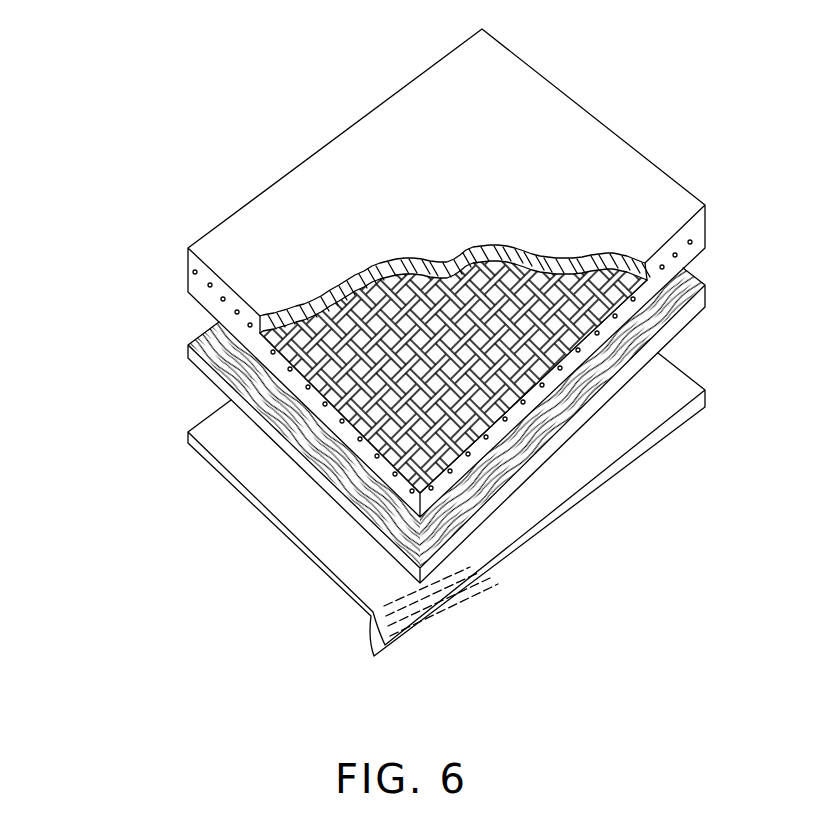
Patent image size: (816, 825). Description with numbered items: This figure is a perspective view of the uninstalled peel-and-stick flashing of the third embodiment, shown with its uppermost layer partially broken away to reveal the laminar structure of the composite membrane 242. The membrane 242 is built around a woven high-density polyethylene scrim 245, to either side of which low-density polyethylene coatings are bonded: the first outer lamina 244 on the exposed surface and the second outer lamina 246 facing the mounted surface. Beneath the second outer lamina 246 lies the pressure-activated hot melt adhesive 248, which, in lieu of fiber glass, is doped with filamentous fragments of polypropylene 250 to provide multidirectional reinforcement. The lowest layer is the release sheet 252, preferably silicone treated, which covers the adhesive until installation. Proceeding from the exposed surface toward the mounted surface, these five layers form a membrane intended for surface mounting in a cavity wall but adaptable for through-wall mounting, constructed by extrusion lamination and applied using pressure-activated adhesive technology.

The three-layer composite membrane 242 is at (307, 556).
The first outer lamina 244 is at (188, 258).
The encapsulated scrim 245 is at (348, 420).
The second outer lamina 246 is at (188, 296).
The hot melt adhesive 248 is at (207, 374).
The filamentous fragments of polypropylene 250 is at (188, 344).
The release sheet 252 is at (337, 588).